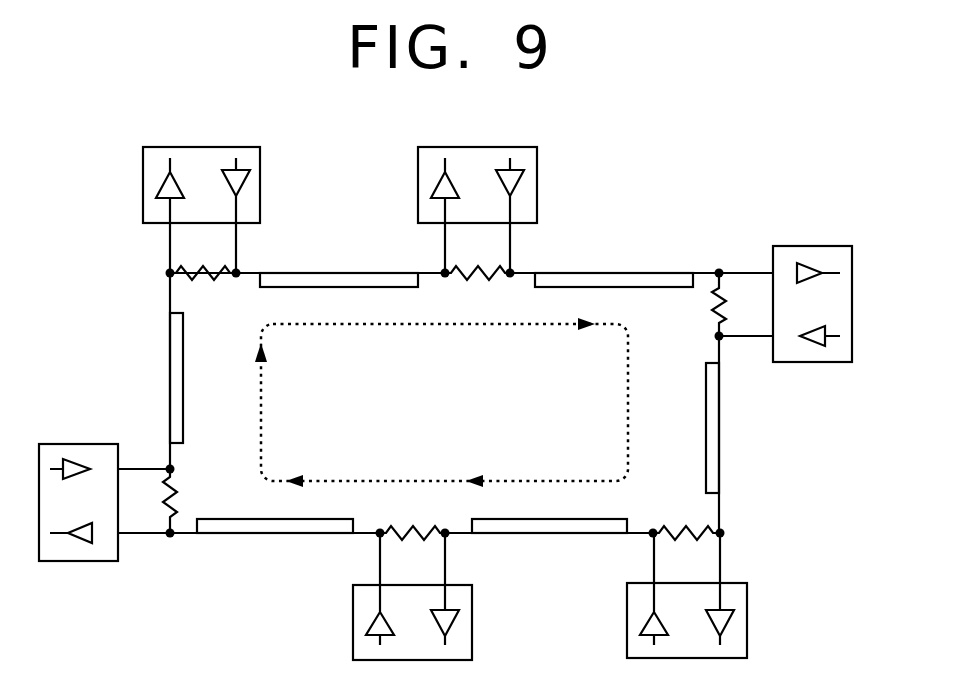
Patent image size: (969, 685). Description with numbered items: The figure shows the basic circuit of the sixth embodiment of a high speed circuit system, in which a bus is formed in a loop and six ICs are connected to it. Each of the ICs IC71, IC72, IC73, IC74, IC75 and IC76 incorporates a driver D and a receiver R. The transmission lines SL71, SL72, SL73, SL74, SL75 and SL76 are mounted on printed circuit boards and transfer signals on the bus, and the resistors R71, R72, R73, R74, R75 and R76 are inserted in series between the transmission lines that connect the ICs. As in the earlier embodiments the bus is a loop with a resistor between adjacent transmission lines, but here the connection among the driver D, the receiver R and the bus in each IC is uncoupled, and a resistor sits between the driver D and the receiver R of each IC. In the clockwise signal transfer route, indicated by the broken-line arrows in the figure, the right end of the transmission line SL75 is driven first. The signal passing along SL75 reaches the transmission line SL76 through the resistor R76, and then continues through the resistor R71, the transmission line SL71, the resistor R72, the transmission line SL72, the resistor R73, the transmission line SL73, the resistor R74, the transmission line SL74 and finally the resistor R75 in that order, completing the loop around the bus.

The IC IC71 is at (262, 170).
The IC IC72 is at (539, 168).
The IC IC73 is at (800, 244).
The IC IC74 is at (625, 631).
The IC IC75 is at (351, 633).
The IC IC76 is at (85, 563).
The resistor R71 is at (203, 288).
The resistor R72 is at (478, 288).
The resistor R73 is at (693, 305).
The resistor R74 is at (686, 517).
The resistor R75 is at (412, 517).
The resistor R76 is at (192, 501).
The transmission line SL71 is at (339, 265).
The transmission line SL72 is at (614, 265).
The transmission line SL73 is at (742, 428).
The transmission line SL74 is at (549, 541).
The transmission line SL75 is at (275, 541).
The transmission line SL76 is at (140, 378).